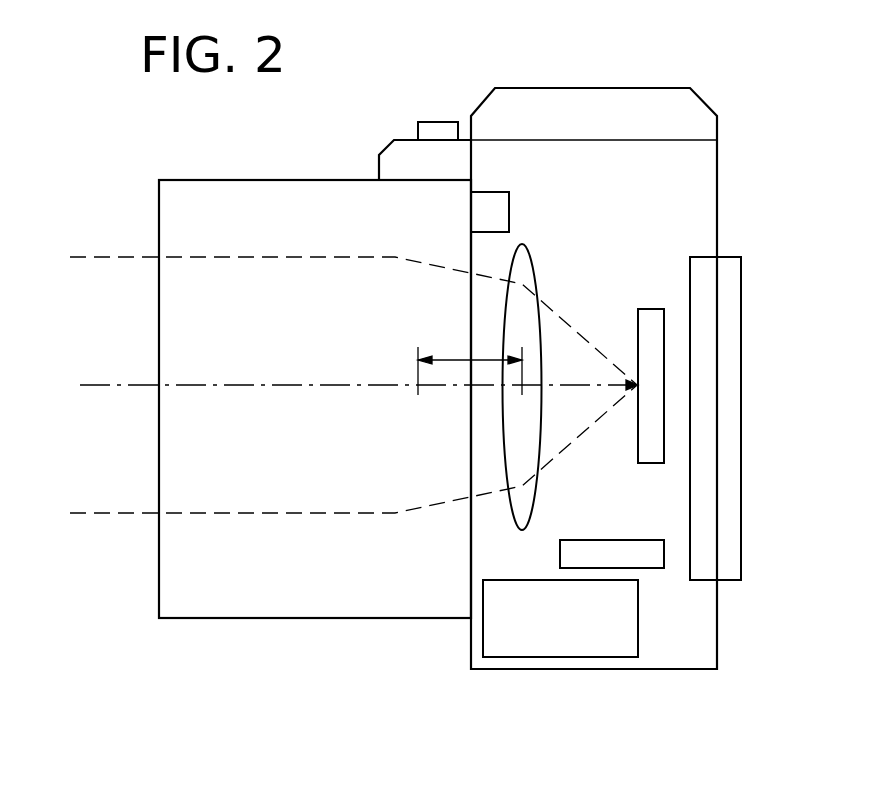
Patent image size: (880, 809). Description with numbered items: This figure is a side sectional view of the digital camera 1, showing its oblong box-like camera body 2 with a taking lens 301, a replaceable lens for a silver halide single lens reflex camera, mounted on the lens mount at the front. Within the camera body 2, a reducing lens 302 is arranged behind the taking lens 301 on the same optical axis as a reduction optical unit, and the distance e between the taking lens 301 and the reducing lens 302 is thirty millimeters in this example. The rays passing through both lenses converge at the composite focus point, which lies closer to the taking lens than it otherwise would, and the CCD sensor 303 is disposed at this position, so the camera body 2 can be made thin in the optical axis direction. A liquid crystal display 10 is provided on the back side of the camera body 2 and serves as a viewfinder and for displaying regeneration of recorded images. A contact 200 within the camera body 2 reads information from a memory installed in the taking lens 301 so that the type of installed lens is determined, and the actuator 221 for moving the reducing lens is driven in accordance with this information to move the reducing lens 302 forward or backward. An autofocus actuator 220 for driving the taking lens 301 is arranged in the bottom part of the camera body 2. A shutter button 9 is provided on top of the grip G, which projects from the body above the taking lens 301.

The digital camera 1 is at (741, 113).
The camera body 2 is at (547, 88).
The shutter button 9 is at (418, 130).
The grip G is at (379, 167).
The liquid crystal display (LCD) 10 is at (741, 310).
The contact 200 is at (509, 212).
The autofocus (AF) actuator 220 is at (522, 657).
The actuator for moving the reducing lens 221 is at (614, 540).
The taking lens 301 is at (368, 612).
The reducing lens 302 is at (533, 263).
The CCD sensor 303 is at (653, 309).
The distance between the lenses e is at (450, 358).